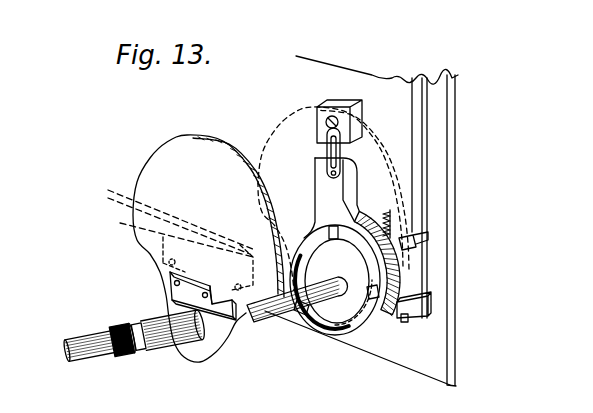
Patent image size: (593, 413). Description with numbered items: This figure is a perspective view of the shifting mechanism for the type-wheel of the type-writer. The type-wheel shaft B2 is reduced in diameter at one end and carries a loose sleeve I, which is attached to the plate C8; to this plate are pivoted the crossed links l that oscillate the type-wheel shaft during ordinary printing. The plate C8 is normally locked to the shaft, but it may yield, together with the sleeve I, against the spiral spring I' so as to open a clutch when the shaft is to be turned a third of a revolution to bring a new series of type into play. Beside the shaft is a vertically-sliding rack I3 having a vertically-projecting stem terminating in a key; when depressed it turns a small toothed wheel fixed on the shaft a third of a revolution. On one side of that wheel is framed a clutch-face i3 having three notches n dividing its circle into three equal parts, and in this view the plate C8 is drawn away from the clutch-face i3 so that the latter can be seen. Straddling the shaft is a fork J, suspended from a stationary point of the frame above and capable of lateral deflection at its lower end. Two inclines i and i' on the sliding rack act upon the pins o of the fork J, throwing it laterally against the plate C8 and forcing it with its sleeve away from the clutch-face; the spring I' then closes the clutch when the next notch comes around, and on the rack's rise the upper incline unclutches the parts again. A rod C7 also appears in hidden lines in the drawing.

The type-wheel shaft B2 is at (86, 338).
The rod C7 is at (110, 204).
The plate C8 is at (208, 248).
The loose sleeve I is at (174, 343).
The spring I' is at (127, 325).
The vertically-sliding rack I3 is at (413, 267).
The fork J is at (313, 190).
The incline i is at (434, 305).
The incline i' is at (435, 226).
The clutch-face i3 is at (335, 280).
The crossed links l is at (182, 261).
The notch n is at (383, 330).
The pin o is at (405, 324).